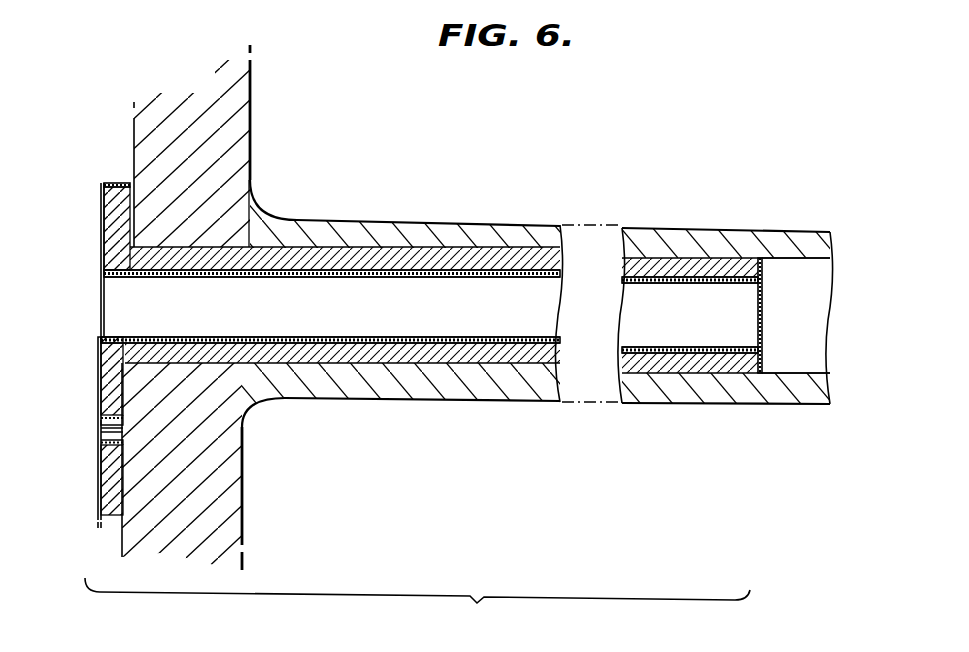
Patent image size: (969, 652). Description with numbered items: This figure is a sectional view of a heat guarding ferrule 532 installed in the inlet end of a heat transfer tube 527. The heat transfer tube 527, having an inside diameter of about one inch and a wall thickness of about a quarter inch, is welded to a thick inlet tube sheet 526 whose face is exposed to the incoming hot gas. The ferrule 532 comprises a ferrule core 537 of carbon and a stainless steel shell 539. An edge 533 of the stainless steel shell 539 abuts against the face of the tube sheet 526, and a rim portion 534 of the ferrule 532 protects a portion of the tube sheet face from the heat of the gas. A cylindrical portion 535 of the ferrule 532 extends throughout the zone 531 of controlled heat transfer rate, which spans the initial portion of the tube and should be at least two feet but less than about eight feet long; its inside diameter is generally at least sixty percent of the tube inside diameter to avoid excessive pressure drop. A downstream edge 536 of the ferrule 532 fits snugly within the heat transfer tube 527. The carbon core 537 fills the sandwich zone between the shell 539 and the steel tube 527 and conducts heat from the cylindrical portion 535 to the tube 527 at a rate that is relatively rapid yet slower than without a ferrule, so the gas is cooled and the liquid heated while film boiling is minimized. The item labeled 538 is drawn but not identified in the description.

The inlet tube sheet 526 is at (240, 137).
The heat transfer tube 527 is at (686, 232).
The zone of controlled heat transfer rate 531 is at (417, 606).
The heat guarding ferrule 532 is at (100, 203).
The edge of the stainless steel shell 533 is at (115, 183).
The rim portion 534 is at (104, 272).
The cylindrical portion 535 is at (465, 342).
The downstream edge 536 is at (772, 262).
The ferrule core 537 is at (445, 258).
The nut 538 is at (100, 436).
The stainless steel shell 539 is at (102, 183).